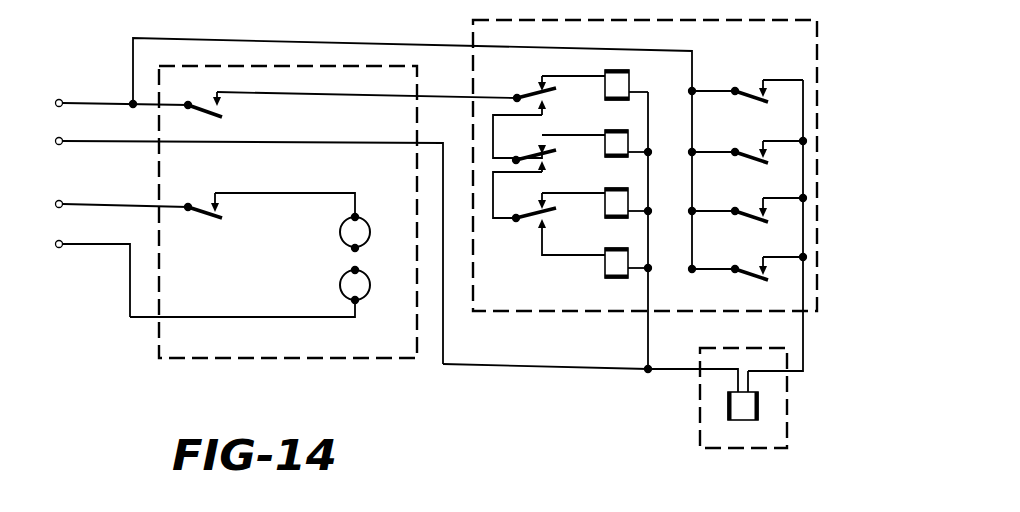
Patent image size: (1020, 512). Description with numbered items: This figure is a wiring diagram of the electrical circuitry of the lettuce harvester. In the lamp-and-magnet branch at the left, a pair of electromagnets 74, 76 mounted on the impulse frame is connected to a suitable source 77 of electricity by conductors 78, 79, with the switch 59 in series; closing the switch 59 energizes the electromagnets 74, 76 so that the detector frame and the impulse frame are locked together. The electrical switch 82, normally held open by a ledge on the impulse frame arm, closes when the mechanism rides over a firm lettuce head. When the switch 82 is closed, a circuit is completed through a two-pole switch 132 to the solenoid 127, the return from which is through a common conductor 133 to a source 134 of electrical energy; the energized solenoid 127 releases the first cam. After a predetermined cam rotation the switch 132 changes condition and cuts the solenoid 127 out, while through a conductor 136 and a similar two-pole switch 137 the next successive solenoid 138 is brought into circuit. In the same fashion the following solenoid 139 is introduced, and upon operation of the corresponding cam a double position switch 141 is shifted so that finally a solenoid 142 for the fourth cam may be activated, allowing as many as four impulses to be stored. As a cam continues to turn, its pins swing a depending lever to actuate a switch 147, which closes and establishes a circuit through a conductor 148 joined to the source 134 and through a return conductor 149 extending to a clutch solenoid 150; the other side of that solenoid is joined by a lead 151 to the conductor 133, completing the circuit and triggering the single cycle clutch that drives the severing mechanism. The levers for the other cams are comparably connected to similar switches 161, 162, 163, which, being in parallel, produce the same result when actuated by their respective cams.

The source of electrical energy 134 is at (241, 232).
The conductor 148 is at (314, 44).
The electrical switch 82 is at (225, 111).
The two-pole switch 132 is at (540, 86).
The conductor 136 is at (494, 153).
The two-pole switch 137 is at (548, 152).
The solenoid 138 is at (613, 130).
The solenoid 127 is at (627, 84).
The double position switch 141 is at (548, 214).
The solenoid 139 is at (619, 206).
The solenoid 142 is at (606, 262).
The lead 151 is at (656, 372).
The common conductor 133 is at (637, 343).
The clutch solenoid 150 is at (734, 403).
The return conductor 149 is at (803, 299).
The switch 147 is at (757, 87).
The switch 161 is at (748, 147).
The switch 162 is at (750, 209).
The switch 163 is at (746, 266).
The source of electricity 77 is at (85, 259).
The conductor 79 is at (139, 209).
The switch 59 is at (224, 215).
The electromagnet 74 is at (353, 235).
The electromagnet 76 is at (353, 289).
The conductor 78 is at (254, 297).